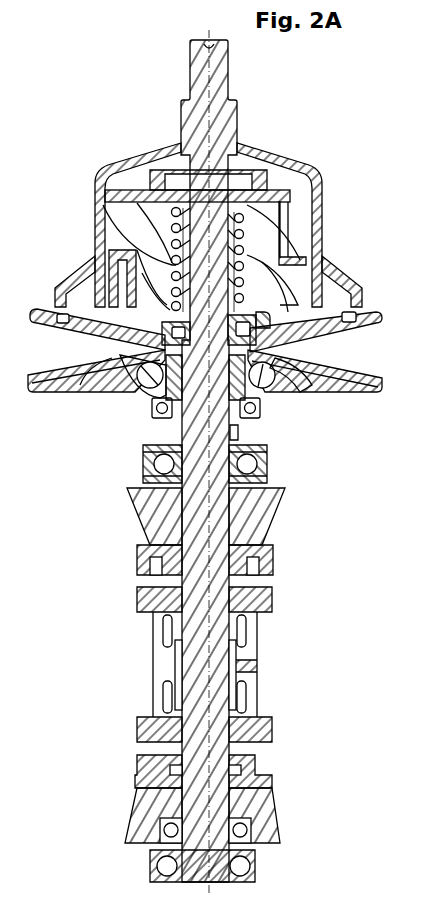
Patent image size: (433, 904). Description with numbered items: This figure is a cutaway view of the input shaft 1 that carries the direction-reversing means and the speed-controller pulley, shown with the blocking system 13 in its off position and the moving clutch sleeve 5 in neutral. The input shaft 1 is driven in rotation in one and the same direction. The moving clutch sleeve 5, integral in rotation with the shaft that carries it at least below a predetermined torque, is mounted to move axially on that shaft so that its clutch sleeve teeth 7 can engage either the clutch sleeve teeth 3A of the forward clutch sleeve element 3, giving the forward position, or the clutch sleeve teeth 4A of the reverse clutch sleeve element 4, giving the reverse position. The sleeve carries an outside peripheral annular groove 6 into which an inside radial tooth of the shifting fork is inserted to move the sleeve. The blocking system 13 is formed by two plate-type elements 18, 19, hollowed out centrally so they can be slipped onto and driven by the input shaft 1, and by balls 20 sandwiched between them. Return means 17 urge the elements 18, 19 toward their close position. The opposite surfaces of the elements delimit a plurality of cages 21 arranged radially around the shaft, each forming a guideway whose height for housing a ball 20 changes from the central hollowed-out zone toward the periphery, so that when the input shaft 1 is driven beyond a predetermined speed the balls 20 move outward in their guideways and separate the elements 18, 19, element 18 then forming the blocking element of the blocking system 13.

The input shaft 1 is at (236, 71).
The forward clutch sleeve element 3 is at (281, 515).
The clutch sleeve teeth 3A is at (278, 564).
The reverse clutch sleeve element 4 is at (277, 816).
The clutch sleeve teeth 4A is at (269, 764).
The moving clutch sleeve 5 is at (264, 692).
The outside peripheral annular groove 6 is at (253, 667).
The clutch sleeve teeth 7 is at (133, 589).
The blocking system 13 is at (138, 417).
The return means 17 is at (249, 439).
The plate-type element 18 is at (317, 390).
The plate-type element 19 is at (352, 370).
The balls 20 is at (140, 395).
The cages 21 is at (128, 373).